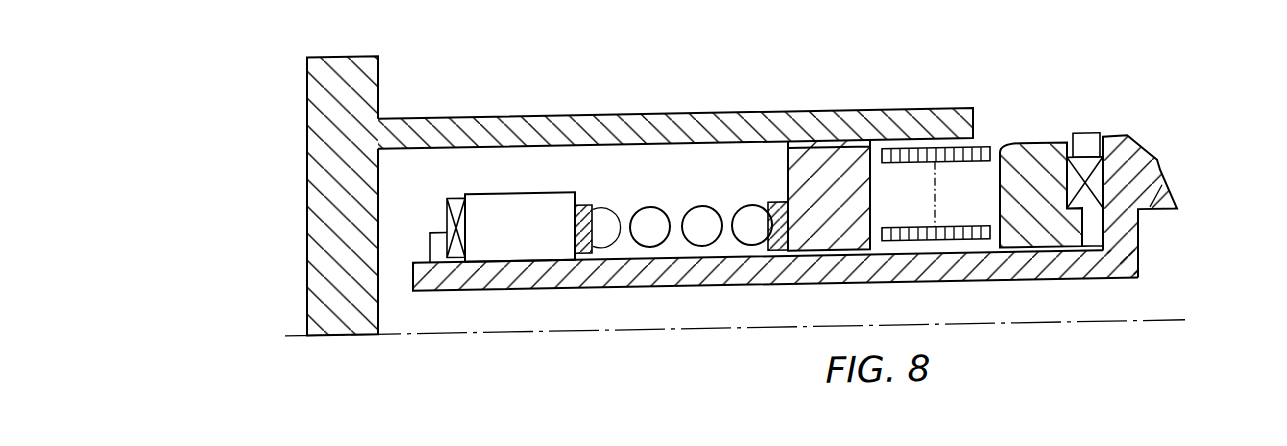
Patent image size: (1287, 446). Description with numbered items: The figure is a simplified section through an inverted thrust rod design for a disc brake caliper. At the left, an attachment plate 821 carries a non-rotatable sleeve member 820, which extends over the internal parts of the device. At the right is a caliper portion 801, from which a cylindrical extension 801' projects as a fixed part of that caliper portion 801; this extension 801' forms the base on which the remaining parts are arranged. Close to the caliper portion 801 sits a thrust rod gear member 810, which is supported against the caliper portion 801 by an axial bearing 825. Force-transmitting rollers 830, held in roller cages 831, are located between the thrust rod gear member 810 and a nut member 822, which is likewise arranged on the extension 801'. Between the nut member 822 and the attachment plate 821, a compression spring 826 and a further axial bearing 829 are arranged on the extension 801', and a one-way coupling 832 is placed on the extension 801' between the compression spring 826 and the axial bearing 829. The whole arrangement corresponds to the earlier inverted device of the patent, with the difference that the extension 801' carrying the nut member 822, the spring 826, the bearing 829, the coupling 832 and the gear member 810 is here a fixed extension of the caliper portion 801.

The attachment plate 821 is at (333, 101).
The non-rotatable sleeve member 820 is at (527, 130).
The axial bearing 829 is at (450, 192).
The one-way coupling 832 is at (522, 230).
The compression spring 826 is at (650, 216).
The nut member 822 is at (823, 162).
The force-transmitting rollers 830 is at (908, 181).
The roller cages 831 is at (970, 228).
The thrust rod gear member 810 is at (1038, 158).
The axial bearing 825 is at (1096, 154).
The caliper portion 801 is at (1182, 205).
The cylindrical extension 801' is at (775, 315).